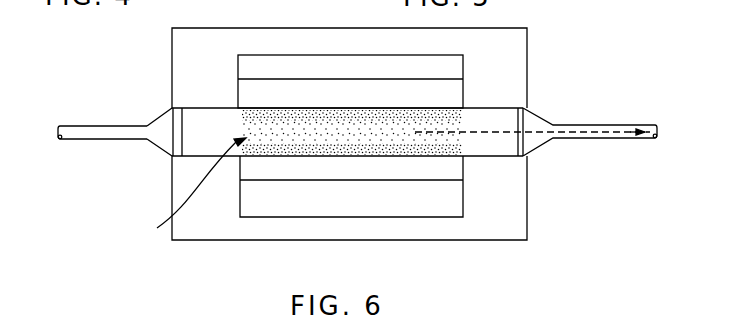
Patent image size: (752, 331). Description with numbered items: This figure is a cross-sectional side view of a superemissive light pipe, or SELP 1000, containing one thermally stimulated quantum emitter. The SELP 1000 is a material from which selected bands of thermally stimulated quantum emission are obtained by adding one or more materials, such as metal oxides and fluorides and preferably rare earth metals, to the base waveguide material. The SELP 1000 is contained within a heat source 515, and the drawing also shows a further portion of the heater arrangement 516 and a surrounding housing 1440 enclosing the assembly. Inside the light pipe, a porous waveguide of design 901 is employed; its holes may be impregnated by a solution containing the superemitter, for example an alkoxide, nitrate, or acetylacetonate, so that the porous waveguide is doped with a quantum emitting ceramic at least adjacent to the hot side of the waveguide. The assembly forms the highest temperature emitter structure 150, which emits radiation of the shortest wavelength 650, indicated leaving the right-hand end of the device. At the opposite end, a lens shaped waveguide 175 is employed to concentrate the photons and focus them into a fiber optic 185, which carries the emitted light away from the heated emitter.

The highest temperature emitter structure 150 is at (200, 116).
The lens shaped waveguide 175 is at (163, 141).
The fiber optic 185 is at (97, 141).
The heat source 515 is at (240, 93).
The heater coil 516 is at (453, 68).
The housing 1440 is at (518, 82).
The shortest wavelength radiation 650 is at (593, 130).
The porous waveguide 901 is at (380, 138).
The superemissive light pipe (SELP) 1000 is at (381, 186).